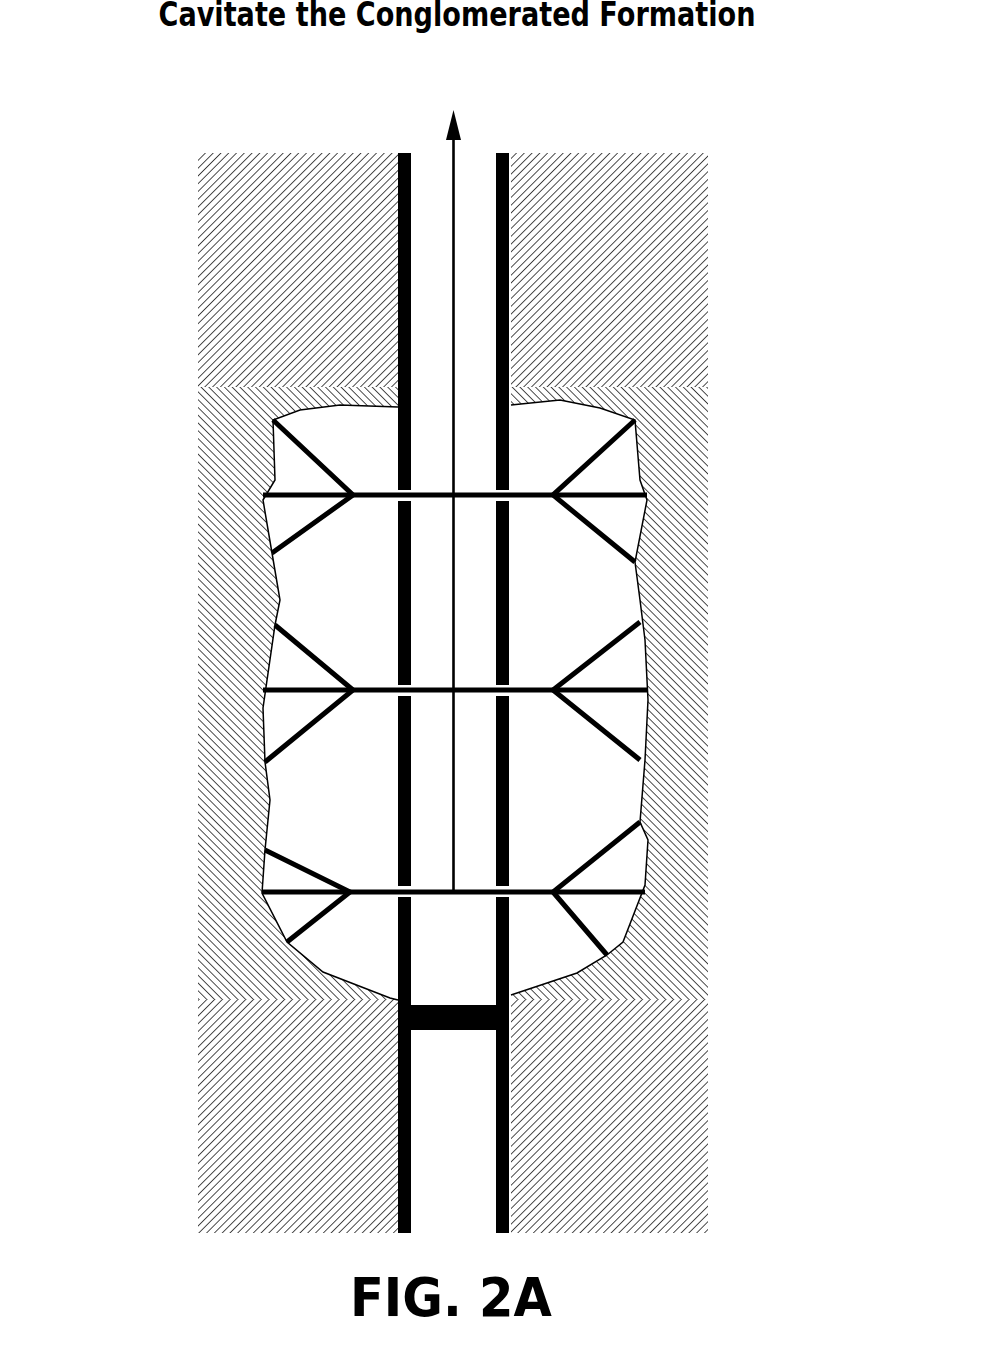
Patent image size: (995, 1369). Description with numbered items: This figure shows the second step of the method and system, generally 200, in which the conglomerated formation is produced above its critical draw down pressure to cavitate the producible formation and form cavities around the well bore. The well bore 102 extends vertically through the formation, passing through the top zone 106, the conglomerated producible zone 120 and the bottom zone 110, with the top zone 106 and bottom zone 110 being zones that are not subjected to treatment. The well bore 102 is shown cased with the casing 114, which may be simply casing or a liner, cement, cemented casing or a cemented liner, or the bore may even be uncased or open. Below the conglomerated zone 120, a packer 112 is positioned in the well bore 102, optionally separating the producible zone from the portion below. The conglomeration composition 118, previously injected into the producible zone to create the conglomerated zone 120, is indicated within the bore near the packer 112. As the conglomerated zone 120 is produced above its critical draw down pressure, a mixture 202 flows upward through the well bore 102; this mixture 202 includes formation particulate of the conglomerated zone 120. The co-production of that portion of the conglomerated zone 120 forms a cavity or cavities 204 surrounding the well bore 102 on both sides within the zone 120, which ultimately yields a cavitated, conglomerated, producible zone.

The well bore 102 is at (476, 152).
The top zone 106 is at (280, 280).
The bottom zone 110 is at (273, 1130).
The packer 112 is at (397, 1020).
The casing 114 is at (510, 1055).
The conglomeration composition 118 is at (435, 989).
The conglomerated zone 120 is at (225, 622).
The second step of the method and system 200 is at (145, 664).
The mixture 202 is at (450, 152).
The cavity 204 is at (330, 607).